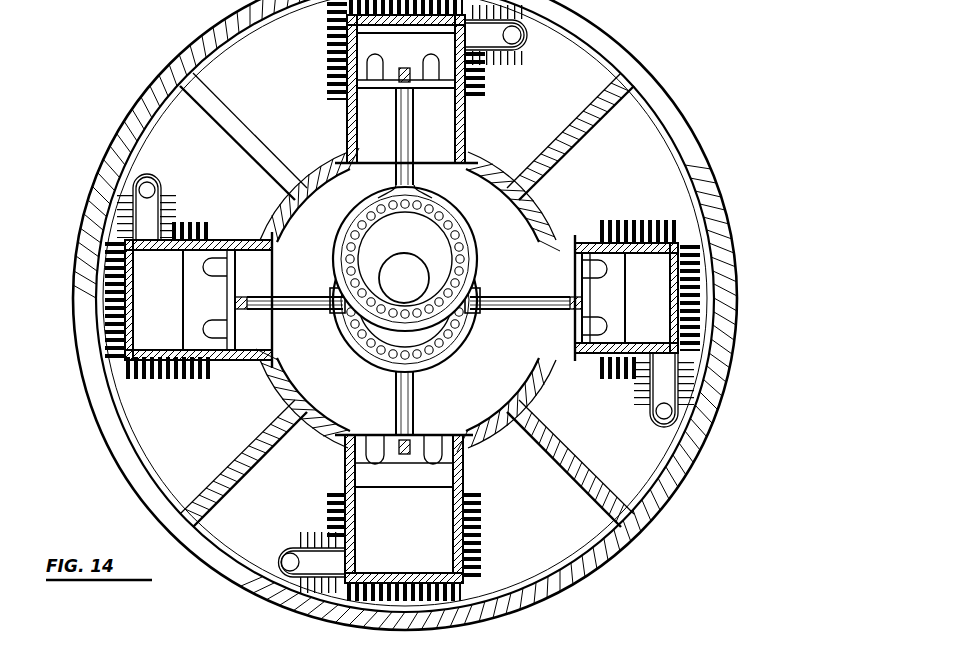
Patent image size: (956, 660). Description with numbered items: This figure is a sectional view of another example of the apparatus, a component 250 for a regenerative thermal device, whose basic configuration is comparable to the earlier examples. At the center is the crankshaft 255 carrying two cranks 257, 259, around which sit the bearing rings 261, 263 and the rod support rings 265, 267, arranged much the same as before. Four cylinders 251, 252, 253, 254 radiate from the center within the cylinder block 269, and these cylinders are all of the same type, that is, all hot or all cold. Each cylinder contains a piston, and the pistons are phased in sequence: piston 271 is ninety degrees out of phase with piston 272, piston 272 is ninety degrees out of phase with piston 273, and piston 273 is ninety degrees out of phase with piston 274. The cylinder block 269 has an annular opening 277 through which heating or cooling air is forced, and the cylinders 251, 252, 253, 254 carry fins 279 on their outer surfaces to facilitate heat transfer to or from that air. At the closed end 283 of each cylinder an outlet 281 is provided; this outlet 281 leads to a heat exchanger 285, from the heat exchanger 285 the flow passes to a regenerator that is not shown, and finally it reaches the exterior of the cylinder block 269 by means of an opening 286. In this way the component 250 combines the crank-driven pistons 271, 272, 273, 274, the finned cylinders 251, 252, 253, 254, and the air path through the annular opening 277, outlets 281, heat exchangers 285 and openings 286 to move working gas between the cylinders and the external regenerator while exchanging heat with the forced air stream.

The component 250 is at (622, 54).
The cylinder 251 is at (475, 120).
The cylinder 252 is at (587, 235).
The cylinder 253 is at (470, 498).
The cylinder 254 is at (225, 362).
The crankshaft 255 is at (428, 240).
The crank 257 is at (365, 267).
The crank 259 is at (387, 345).
The bearing ring 261 is at (462, 272).
The bearing ring 263 is at (433, 348).
The rod support ring 265 is at (474, 232).
The rod support ring 267 is at (462, 339).
The cylinder block 269 is at (568, 176).
The piston 271 is at (420, 64).
The piston 272 is at (620, 323).
The piston 273 is at (411, 482).
The piston 274 is at (217, 297).
The annular opening 277 is at (580, 77).
The fins 279 is at (327, 88).
The outlet 281 is at (345, 562).
The closed end 283 is at (438, 574).
The heat exchanger 285 is at (318, 533).
The opening 286 is at (292, 562).